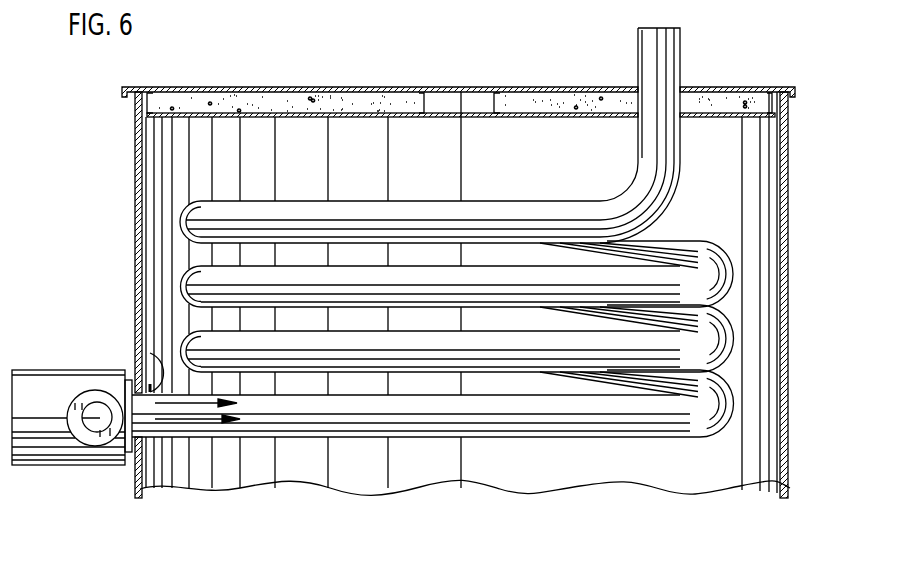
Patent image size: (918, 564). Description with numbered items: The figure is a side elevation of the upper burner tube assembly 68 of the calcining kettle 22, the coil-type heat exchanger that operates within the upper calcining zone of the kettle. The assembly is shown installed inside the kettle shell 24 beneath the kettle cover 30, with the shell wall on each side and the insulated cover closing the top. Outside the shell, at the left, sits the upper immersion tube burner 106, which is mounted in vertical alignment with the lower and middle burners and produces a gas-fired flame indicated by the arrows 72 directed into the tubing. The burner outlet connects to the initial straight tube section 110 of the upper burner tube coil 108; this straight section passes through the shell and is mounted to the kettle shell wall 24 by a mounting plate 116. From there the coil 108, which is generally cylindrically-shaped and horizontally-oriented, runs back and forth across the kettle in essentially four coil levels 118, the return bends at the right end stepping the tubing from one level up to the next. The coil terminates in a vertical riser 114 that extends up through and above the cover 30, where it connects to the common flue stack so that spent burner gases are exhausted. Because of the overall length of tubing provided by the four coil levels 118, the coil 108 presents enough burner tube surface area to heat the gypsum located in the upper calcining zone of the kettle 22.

The calcining kettle 22 is at (791, 431).
The kettle shell 24 is at (788, 305).
The kettle cover 30 is at (283, 104).
The upper burner tube assembly 68 is at (455, 352).
The gas-fired flame 72 is at (188, 421).
The upper immersion tube burner 106 is at (67, 448).
The upper burner tube coil 108 is at (738, 330).
The initial straight tube section 110 is at (305, 419).
The vertical riser 114 is at (662, 70).
The mounting plate 116 is at (157, 357).
The coil levels 118 is at (225, 200).